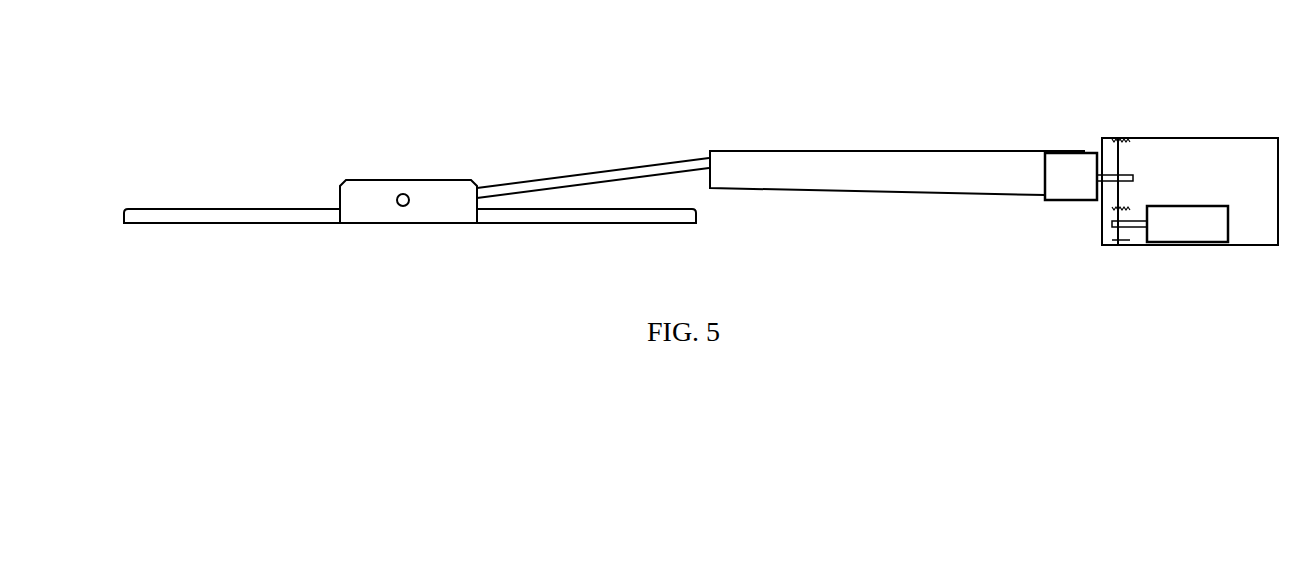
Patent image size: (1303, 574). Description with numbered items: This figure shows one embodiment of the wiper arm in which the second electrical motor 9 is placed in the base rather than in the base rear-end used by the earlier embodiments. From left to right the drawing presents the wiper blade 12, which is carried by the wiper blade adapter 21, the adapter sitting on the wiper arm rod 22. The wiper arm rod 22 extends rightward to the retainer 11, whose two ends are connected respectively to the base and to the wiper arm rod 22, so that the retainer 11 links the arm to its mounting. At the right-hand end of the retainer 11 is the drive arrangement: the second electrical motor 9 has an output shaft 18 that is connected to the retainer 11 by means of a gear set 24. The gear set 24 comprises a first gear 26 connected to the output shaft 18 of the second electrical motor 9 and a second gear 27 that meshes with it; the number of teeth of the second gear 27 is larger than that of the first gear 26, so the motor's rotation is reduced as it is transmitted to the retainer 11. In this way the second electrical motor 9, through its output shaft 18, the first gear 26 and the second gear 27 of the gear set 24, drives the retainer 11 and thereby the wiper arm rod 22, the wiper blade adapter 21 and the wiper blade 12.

The wiper blade 12 is at (220, 214).
The wiper blade adapter 21 is at (448, 202).
The wiper arm rod 22 is at (643, 168).
The retainer 11 is at (818, 180).
The second gear 27 is at (1133, 160).
The gear set 24 is at (1108, 203).
The first gear 26 is at (1110, 240).
The output shaft of the second electrical motor 18 is at (1132, 221).
The second electrical motor 9 is at (1187, 224).